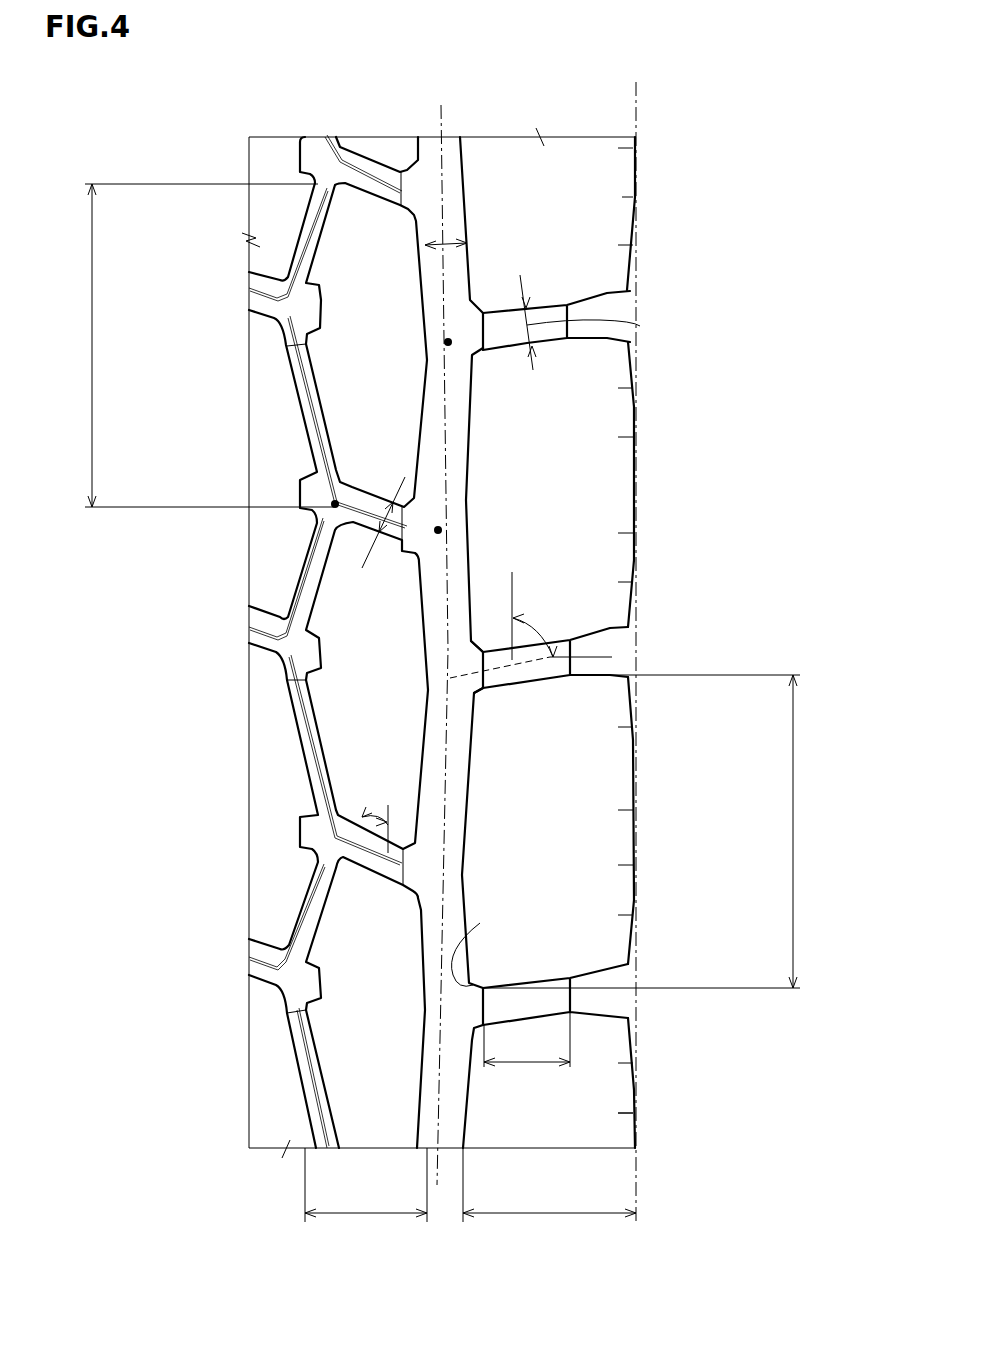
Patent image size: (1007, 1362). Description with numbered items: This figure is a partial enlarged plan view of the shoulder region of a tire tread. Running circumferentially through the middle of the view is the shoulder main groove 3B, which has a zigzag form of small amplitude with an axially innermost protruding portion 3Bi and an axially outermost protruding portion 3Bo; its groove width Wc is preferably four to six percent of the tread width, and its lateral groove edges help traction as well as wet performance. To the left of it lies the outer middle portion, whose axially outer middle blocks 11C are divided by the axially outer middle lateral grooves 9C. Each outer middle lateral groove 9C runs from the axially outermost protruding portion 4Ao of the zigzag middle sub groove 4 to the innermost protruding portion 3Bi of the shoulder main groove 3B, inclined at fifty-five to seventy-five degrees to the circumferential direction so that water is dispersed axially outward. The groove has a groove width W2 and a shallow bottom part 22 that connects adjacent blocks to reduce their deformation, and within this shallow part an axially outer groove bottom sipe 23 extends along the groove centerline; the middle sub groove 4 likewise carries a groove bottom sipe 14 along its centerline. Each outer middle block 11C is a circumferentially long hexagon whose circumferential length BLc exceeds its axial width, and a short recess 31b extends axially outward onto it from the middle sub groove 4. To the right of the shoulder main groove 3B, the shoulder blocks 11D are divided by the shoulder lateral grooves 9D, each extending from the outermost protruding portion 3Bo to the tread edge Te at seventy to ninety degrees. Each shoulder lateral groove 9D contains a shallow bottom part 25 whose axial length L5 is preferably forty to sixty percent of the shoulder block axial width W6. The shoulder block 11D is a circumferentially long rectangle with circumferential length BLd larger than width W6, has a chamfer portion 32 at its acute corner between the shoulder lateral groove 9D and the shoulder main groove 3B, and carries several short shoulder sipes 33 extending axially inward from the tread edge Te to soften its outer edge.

The middle sub groove 4 is at (322, 142).
The shoulder main groove 3B is at (453, 144).
The tread edge Te is at (638, 127).
The groove width of the shoulder main groove Wc is at (445, 244).
The axially outermost protruding portion of the shoulder main groove 3Bo is at (448, 342).
The axially innermost protruding portion of the shoulder main groove 3Bi is at (438, 530).
The groove width of the axially outer middle lateral groove W2 is at (368, 510).
The shoulder lateral groove 9D is at (552, 355).
The axially outer middle lateral groove 9C is at (358, 550).
The axially outer middle block 11C is at (398, 331).
The shoulder block 11D is at (573, 481).
The groove bottom sipe 14 is at (366, 500).
The shallow bottom part 22 is at (391, 506).
The axially outer groove bottom sipe 23 is at (381, 518).
The axially outermost protruding portion of the middle sub groove 4Ao is at (333, 503).
The shallow bottom part 25 is at (547, 667).
The chamfer portion 32 is at (480, 923).
The shoulder sipe 33 is at (632, 1102).
The recess 31b is at (310, 990).
The circumferential length of the outer middle block BLc is at (198, 345).
The circumferential length of the shoulder block BLd is at (649, 831).
The axial length of the shallow bottom part L5 is at (527, 1044).
The axial width of the shoulder block W6 is at (549, 1199).